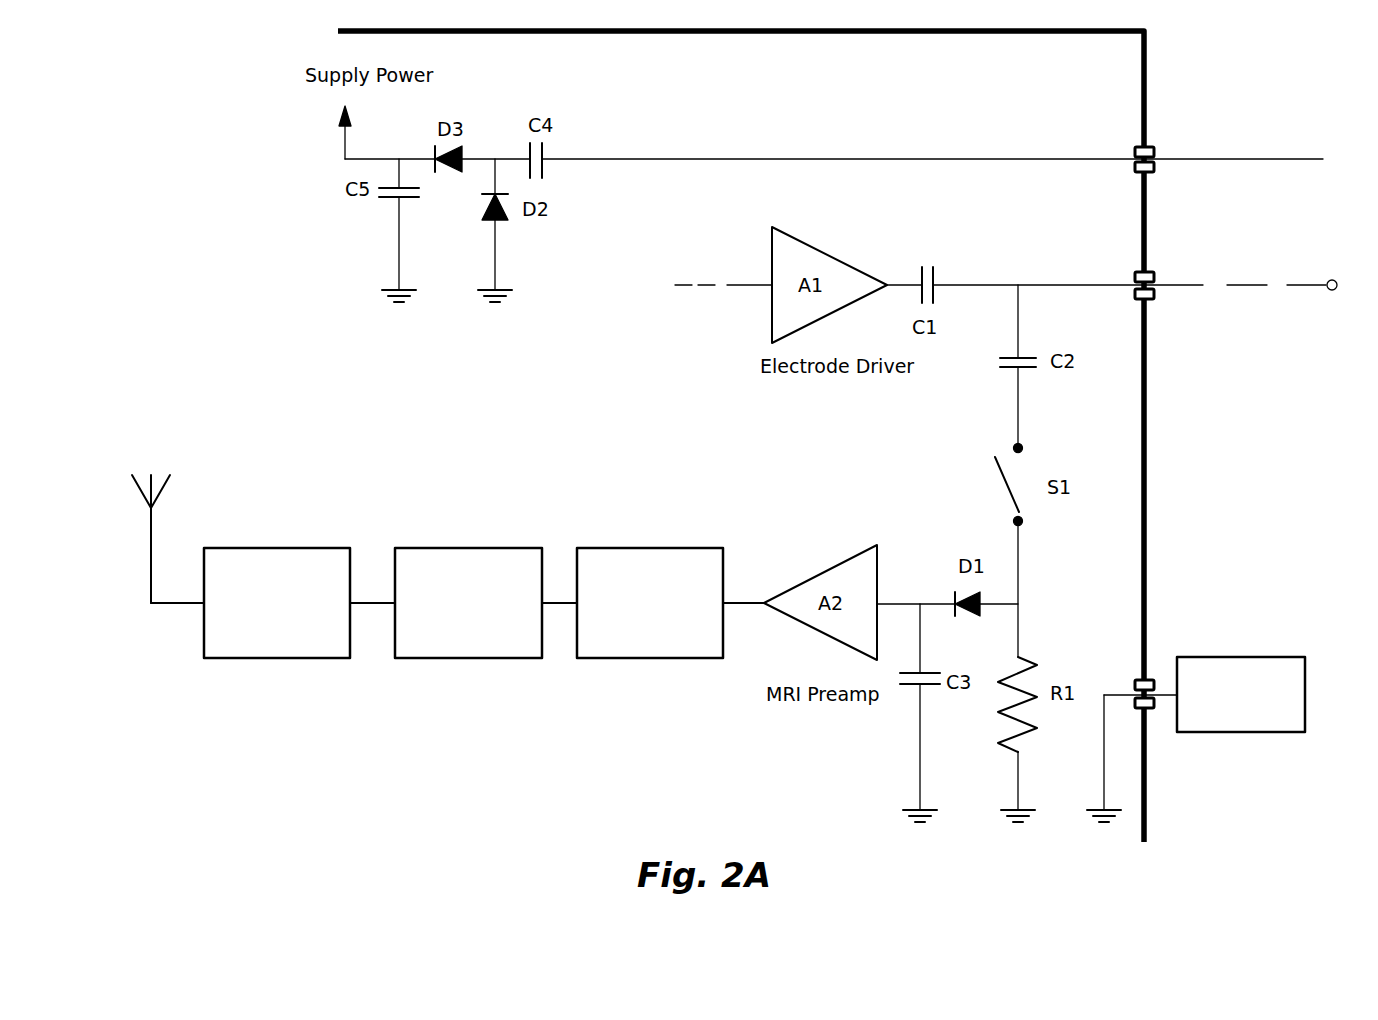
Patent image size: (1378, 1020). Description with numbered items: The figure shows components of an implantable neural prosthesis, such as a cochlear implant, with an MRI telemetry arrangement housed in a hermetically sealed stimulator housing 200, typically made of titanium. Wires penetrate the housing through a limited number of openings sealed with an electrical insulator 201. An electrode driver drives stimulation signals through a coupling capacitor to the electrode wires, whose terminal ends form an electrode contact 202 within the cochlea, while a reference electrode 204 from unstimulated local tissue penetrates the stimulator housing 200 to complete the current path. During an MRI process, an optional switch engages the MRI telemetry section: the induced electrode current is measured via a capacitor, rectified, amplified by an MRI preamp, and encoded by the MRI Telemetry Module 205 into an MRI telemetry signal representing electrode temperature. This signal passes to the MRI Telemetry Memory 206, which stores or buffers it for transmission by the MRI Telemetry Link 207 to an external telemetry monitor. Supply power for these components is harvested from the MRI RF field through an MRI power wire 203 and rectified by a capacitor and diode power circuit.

The stimulator housing 200 is at (833, 33).
The electrical insulator 201 is at (1154, 172).
The electrode contact 202 is at (1330, 291).
The MRI power wire 203 is at (1230, 159).
The reference electrode 204 is at (1250, 657).
The MRI Telemetry Module 205 is at (687, 548).
The MRI Telemetry Memory 206 is at (503, 548).
The MRI Telemetry Link 207 is at (315, 548).